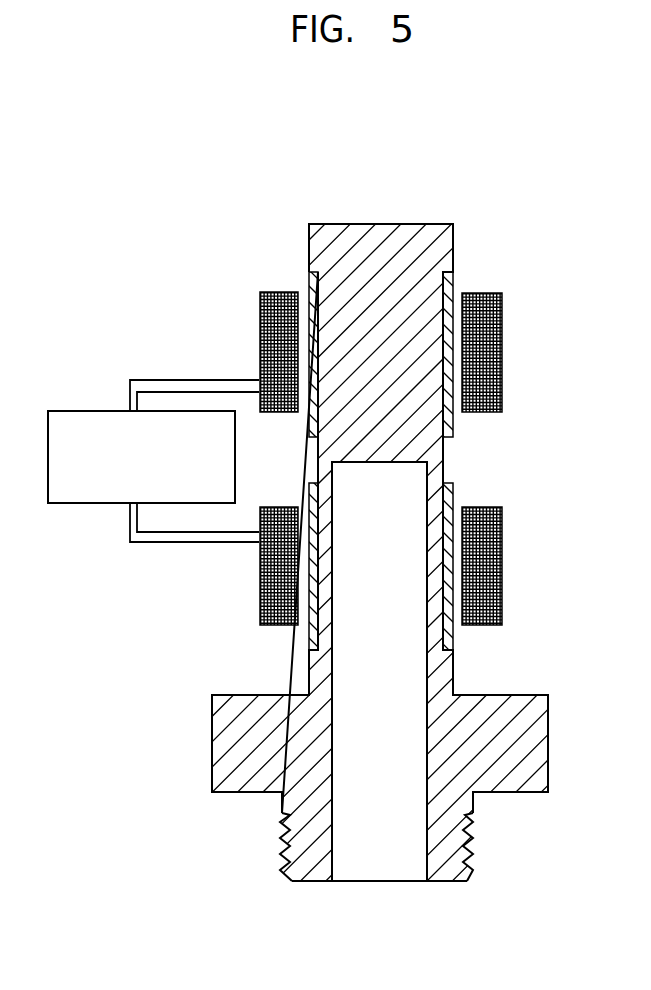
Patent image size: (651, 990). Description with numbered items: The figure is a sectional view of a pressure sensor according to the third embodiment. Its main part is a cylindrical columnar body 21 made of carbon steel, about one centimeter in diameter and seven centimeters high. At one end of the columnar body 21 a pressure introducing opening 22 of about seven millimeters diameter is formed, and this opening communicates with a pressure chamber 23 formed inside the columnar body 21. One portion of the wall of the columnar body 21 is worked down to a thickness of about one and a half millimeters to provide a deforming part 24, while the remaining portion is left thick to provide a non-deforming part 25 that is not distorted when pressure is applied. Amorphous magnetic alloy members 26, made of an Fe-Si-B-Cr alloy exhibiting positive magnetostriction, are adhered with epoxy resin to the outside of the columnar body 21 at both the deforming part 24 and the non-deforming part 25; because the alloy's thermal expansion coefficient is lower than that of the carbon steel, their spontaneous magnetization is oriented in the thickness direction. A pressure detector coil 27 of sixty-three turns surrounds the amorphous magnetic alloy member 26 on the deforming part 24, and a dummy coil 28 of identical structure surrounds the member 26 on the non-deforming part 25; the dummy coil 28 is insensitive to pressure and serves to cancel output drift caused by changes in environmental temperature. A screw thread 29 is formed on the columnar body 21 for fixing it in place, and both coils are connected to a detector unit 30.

The columnar body 21 is at (423, 255).
The pressure introducing opening 22 is at (388, 883).
The pressure chamber 23 is at (373, 597).
The deforming part 24 is at (433, 615).
The non-deforming part 25 is at (355, 298).
The amorphous magnetic alloy members 26 is at (453, 498).
The pressure detector coil 27 is at (502, 570).
The dummy coil 28 is at (498, 347).
The screw thread 29 is at (457, 840).
The detector unit 30 is at (90, 505).